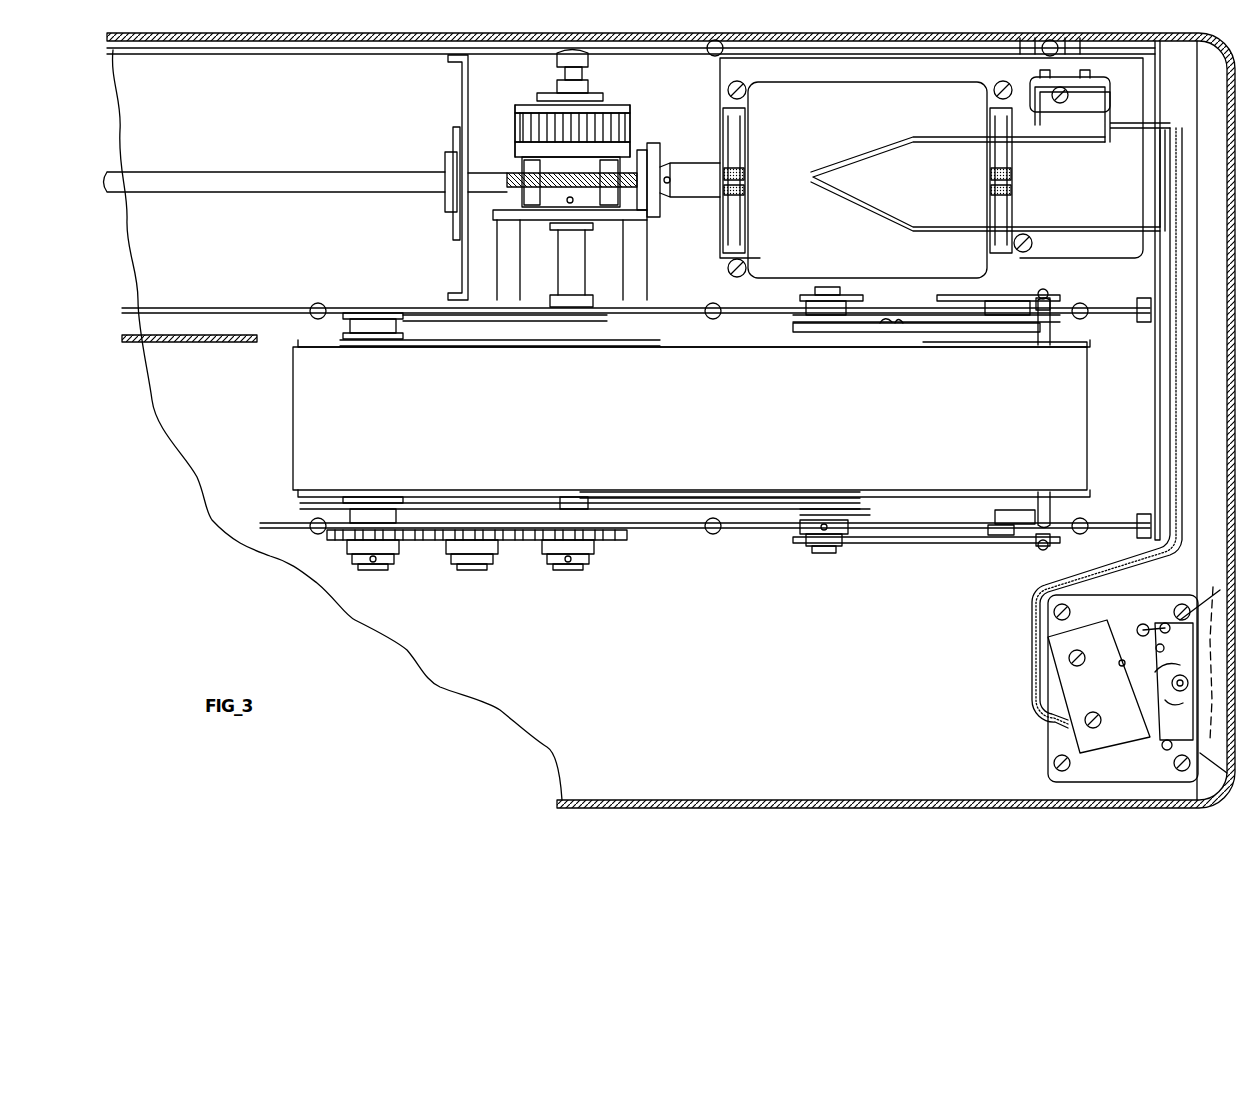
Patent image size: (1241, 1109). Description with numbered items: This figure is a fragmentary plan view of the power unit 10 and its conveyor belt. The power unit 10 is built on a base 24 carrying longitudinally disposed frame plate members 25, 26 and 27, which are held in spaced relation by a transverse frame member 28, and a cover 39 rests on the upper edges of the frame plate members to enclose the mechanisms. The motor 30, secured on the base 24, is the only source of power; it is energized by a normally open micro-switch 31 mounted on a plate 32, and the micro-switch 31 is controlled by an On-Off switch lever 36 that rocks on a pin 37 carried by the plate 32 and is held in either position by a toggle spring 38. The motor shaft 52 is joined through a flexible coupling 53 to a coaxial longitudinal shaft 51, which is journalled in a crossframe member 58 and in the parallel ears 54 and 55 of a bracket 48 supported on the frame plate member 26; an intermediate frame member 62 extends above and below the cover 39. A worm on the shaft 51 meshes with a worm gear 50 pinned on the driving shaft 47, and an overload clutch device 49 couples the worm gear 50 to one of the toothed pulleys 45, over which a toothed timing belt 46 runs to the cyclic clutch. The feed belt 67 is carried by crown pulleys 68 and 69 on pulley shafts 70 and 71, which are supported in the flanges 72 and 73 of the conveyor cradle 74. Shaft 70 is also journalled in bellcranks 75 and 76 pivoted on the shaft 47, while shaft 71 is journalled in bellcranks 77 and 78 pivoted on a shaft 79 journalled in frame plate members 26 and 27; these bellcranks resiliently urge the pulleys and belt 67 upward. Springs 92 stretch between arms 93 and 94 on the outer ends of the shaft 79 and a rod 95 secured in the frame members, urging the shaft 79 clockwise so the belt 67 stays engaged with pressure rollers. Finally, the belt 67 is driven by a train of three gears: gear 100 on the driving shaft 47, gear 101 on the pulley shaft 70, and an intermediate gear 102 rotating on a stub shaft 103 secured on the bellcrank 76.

The power unit 10 is at (186, 501).
The base 24 is at (1188, 478).
The frame plate member 25 is at (383, 52).
The frame plate member 26 is at (255, 308).
The frame plate member 27 is at (285, 530).
The transverse frame member 28 is at (1156, 434).
The motor 30 is at (880, 92).
The micro-switch 31 is at (1122, 740).
The plate 32 is at (1125, 600).
The On-Off switch lever 36 is at (1223, 604).
The pin 37 is at (1182, 700).
The toggle spring 38 is at (1155, 622).
The cover 39 is at (1226, 255).
The toothed pulley 45 is at (602, 128).
The toothed timing belt 46 is at (628, 125).
The shaft 47 is at (578, 266).
The bracket 48 is at (645, 220).
The overload clutch device 49 is at (510, 131).
The worm gear 50 is at (507, 182).
The shaft 51 is at (362, 182).
The motor shaft 52 is at (705, 178).
The flexible coupling 53 is at (652, 150).
The ear 54 is at (632, 152).
The ear 55 is at (520, 166).
The crossframe member 58 is at (470, 90).
The intermediate frame member 62 is at (224, 344).
The feed belt 67 is at (1080, 405).
The crown pulley 68 is at (310, 342).
The crown pulley 69 is at (1075, 340).
The pulley shaft 70 is at (375, 312).
The pulley shaft 71 is at (1000, 536).
The flange 72 is at (462, 342).
The flange 73 is at (526, 498).
The conveyor cradle 74 is at (733, 498).
The bellcrank 75 is at (420, 318).
The bellcrank 76 is at (490, 518).
The bellcrank 77 is at (965, 316).
The bellcrank 78 is at (912, 530).
The shaft 79 is at (835, 290).
The spring 92 is at (1045, 293).
The arm 93 is at (952, 543).
The arm 94 is at (923, 290).
The rod 95 is at (1050, 506).
The gear 100 is at (616, 540).
The gear 101 is at (333, 555).
The gear 102 is at (436, 553).
The stub shaft 103 is at (478, 560).